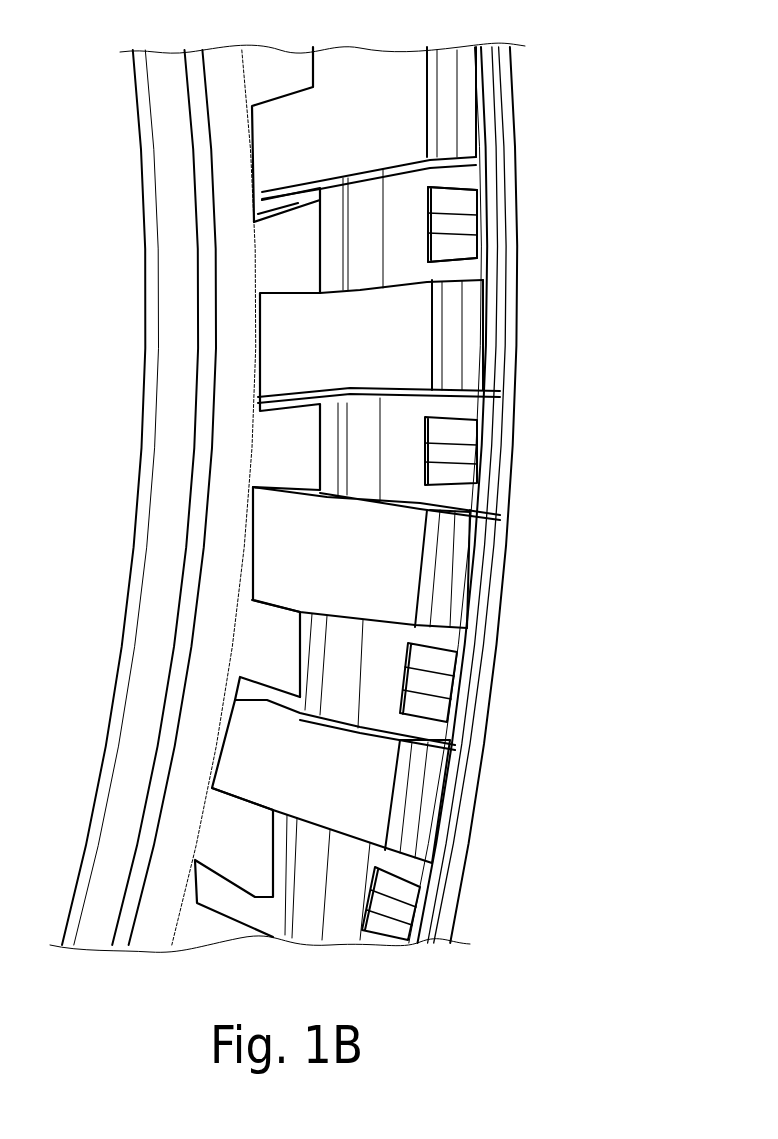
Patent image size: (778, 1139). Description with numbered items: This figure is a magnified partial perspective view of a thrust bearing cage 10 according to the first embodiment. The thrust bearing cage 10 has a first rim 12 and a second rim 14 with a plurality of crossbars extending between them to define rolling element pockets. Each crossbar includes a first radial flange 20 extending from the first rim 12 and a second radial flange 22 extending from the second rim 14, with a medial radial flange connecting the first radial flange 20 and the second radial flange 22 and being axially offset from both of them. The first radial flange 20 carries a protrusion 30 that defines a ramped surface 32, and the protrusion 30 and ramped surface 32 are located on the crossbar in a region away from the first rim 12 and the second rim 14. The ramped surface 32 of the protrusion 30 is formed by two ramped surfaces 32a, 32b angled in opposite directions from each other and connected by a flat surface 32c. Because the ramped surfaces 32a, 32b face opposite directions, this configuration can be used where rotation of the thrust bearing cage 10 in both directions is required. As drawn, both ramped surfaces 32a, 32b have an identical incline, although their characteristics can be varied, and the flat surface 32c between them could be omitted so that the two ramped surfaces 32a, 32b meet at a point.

The thrust bearing cage 10 is at (138, 390).
The first rim 12 is at (518, 350).
The second rim 14 is at (188, 635).
The first radial flange 20 is at (447, 493).
The second radial flange 22 is at (268, 442).
The protrusion 30 is at (447, 222).
The ramped surface 32 is at (448, 193).
The ramped surface 32a is at (462, 197).
The ramped surface 32b is at (460, 240).
The flat surface 32c is at (473, 258).